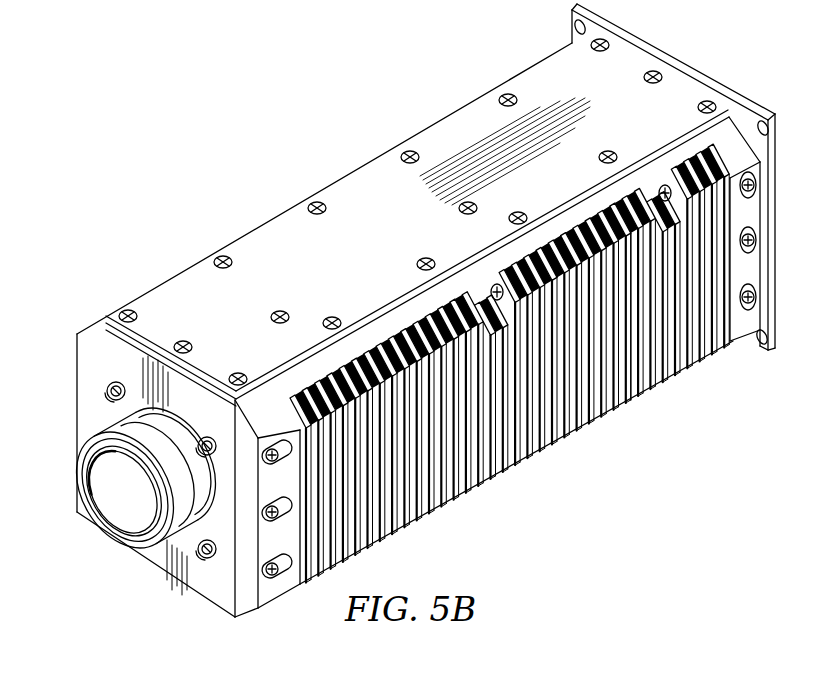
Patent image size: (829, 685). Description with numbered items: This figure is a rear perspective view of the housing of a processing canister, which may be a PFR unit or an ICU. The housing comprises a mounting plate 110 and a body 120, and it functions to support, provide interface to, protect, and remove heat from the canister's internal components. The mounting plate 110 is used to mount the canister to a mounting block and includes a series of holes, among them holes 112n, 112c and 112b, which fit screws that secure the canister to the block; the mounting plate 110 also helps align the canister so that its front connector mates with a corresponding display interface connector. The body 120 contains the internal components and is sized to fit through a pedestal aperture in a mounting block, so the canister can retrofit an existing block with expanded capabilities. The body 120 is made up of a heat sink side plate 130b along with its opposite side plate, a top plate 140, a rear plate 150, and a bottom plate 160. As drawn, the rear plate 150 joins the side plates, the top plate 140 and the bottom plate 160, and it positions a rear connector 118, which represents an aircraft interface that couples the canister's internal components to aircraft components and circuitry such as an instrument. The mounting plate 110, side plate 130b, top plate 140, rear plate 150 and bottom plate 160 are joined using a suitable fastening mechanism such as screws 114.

The mounting plate 110 is at (700, 77).
The hole 112n is at (575, 27).
The hole 112c is at (763, 120).
The hole 112b is at (742, 342).
The screw 114 is at (234, 268).
The rear connector 118 is at (110, 501).
The body 120 is at (525, 350).
The heat sink side plate 130b is at (500, 444).
The top plate 140 is at (362, 181).
The rear plate 150 is at (92, 371).
The bottom plate 160 is at (627, 405).